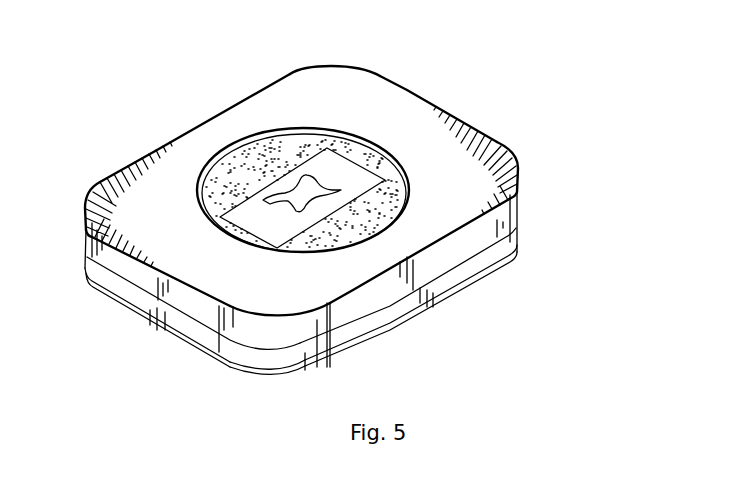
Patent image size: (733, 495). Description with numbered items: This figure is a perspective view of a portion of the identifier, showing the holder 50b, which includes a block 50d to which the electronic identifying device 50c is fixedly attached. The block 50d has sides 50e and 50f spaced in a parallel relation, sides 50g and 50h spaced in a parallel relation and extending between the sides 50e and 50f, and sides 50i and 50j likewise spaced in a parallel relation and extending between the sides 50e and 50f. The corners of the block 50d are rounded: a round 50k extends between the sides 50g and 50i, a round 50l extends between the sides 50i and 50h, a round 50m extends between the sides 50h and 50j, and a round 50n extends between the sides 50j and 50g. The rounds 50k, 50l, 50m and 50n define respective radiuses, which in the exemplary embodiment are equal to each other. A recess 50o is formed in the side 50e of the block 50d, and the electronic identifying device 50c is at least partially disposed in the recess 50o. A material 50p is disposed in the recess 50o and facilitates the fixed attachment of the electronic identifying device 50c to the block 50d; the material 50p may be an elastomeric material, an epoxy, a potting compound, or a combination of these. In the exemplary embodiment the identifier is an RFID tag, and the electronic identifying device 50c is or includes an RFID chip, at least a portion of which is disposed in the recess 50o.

The holder 50b is at (257, 96).
The electronic identifying device 50c is at (280, 190).
The block 50d is at (187, 343).
The side 50e is at (440, 110).
The side 50f is at (397, 323).
The side 50g is at (157, 150).
The side 50h is at (453, 252).
The side 50i is at (143, 282).
The side 50j is at (407, 90).
The round 50k is at (85, 228).
The round 50l is at (273, 363).
The round 50m is at (519, 186).
The round 50n is at (330, 66).
The recess 50o is at (327, 130).
The material 50p is at (240, 158).